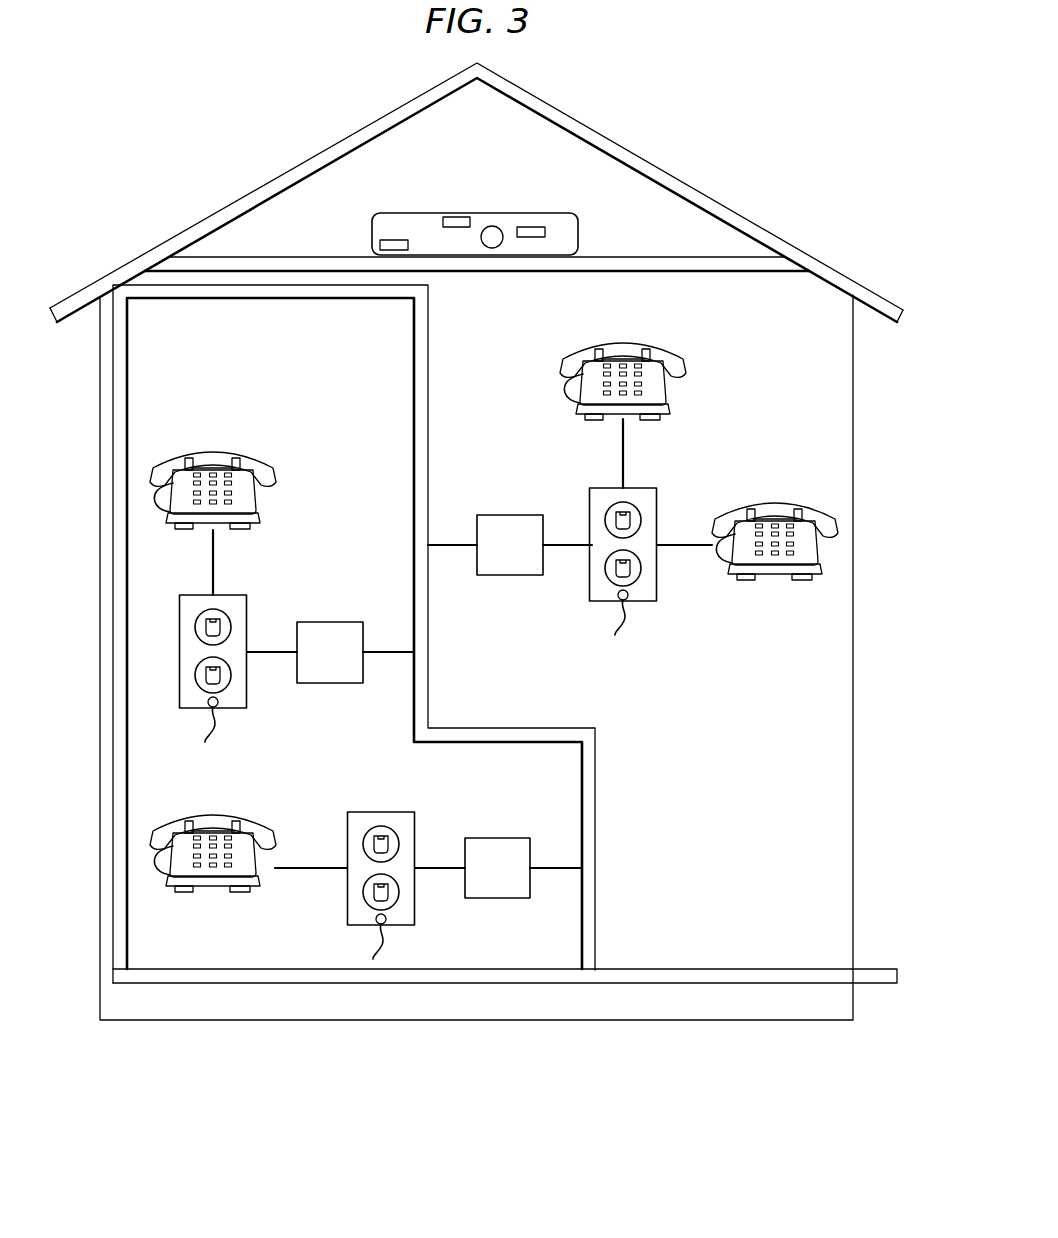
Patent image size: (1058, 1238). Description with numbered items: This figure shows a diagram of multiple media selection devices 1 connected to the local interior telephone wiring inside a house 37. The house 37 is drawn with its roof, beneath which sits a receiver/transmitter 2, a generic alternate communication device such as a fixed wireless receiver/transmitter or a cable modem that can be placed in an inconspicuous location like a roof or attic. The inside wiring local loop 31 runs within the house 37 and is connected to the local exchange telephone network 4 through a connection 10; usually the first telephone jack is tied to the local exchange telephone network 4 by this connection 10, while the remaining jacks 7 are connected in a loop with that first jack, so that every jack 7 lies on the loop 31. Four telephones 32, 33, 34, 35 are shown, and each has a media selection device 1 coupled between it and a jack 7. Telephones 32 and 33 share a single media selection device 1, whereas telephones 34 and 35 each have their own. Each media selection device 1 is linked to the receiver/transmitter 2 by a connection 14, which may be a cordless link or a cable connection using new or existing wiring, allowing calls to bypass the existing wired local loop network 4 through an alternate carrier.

The media selection device 1 is at (250, 603).
The receiver/transmitter 2 is at (555, 213).
The local exchange telephone network 4 is at (900, 1036).
The RJ-11 jack 7 is at (345, 622).
The connection 10 is at (870, 968).
The connection 14 is at (220, 728).
The inside wiring local loop 31 is at (597, 806).
The telephone 32 is at (668, 346).
The telephone 33 is at (788, 504).
The telephone 34 is at (257, 453).
The telephone 35 is at (258, 818).
The house 37 is at (830, 266).